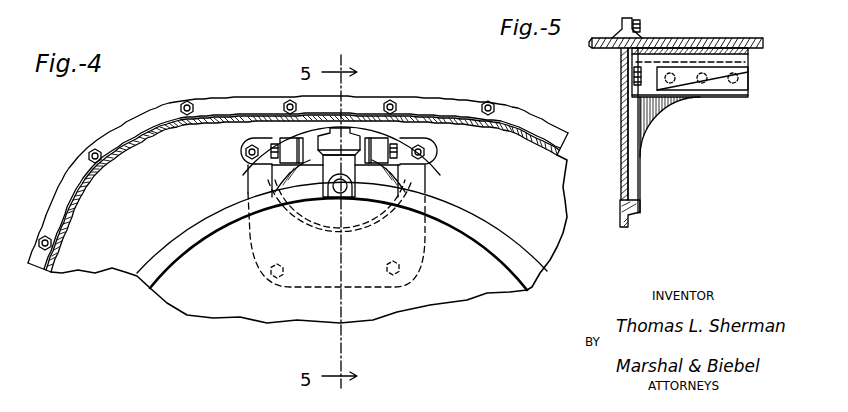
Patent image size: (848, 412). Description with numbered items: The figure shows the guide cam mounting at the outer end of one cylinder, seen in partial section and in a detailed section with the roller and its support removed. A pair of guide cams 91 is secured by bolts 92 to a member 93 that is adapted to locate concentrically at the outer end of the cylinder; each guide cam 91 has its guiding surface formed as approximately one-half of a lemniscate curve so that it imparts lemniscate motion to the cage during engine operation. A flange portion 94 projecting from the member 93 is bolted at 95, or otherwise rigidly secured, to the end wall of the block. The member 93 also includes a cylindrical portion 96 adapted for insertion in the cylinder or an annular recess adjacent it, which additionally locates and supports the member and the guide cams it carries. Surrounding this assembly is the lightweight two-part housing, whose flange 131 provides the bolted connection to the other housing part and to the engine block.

In FIG. 4, the flange 131 is at (111, 141).
In FIG. 4, the guide cam 91 is at (292, 147).
In FIG. 5, the guide cam 91 is at (748, 73).
In FIG. 4, the bolt 92 is at (262, 158).
In FIG. 4, the member 93 is at (393, 133).
In FIG. 5, the member 93 is at (660, 105).
In FIG. 4, the flange portion 94 is at (406, 178).
In FIG. 4, the bolting location 95 is at (403, 266).
In FIG. 5, the bolting location 95 is at (626, 92).
In FIG. 5, the cylindrical portion 96 is at (621, 64).